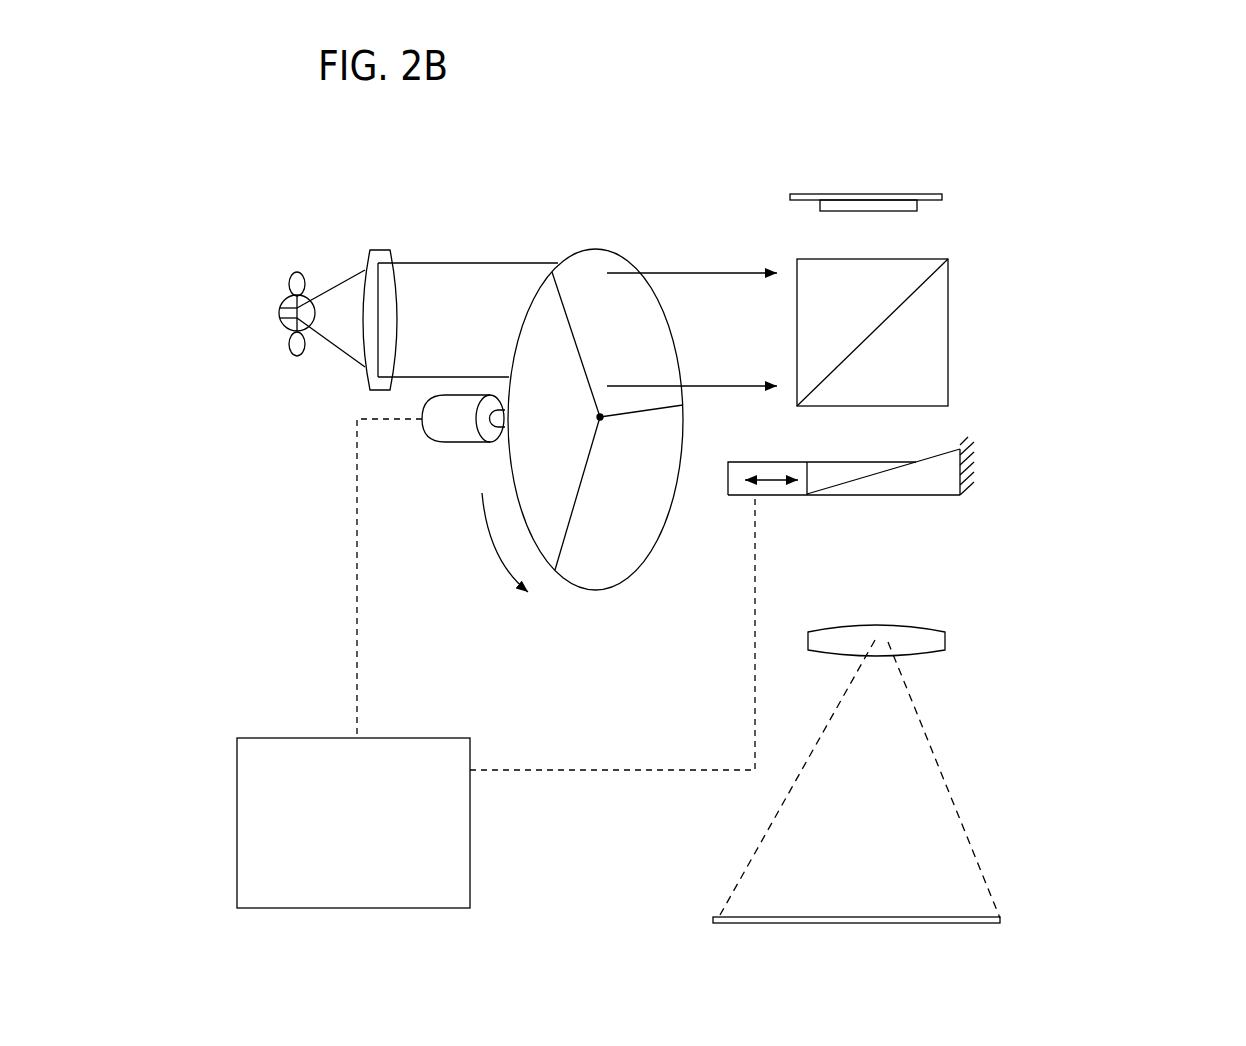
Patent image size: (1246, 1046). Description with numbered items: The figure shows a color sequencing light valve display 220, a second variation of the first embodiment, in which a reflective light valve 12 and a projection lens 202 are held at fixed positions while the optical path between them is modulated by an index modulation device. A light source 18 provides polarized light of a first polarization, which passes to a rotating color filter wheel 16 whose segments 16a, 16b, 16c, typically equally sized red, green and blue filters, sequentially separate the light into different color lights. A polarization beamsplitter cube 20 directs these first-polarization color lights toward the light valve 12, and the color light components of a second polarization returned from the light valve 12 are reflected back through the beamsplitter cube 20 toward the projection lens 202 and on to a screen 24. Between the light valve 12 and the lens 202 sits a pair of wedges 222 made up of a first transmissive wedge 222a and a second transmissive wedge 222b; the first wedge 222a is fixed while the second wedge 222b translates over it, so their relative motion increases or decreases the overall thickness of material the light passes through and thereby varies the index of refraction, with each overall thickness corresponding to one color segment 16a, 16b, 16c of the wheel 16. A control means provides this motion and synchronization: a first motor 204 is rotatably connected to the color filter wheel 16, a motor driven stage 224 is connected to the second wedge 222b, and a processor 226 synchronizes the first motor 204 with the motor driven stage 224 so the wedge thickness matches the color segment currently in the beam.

The light valve 12 is at (898, 197).
The color filter wheel 16 is at (630, 577).
The red segment 16a is at (597, 262).
The green segment 16b is at (663, 473).
The blue segment 16c is at (555, 343).
The light source 18 is at (278, 308).
The polarization beamsplitter cube 20 is at (950, 297).
The screen 24 is at (720, 922).
The projection lens 202 is at (938, 640).
The first motor 204 is at (457, 433).
The display 220 is at (1087, 282).
The pair of wedges 222 is at (920, 482).
The first wedge 222a is at (925, 485).
The second wedge 222b is at (835, 472).
The motor driven stage 224 is at (778, 498).
The processor 226 is at (262, 736).